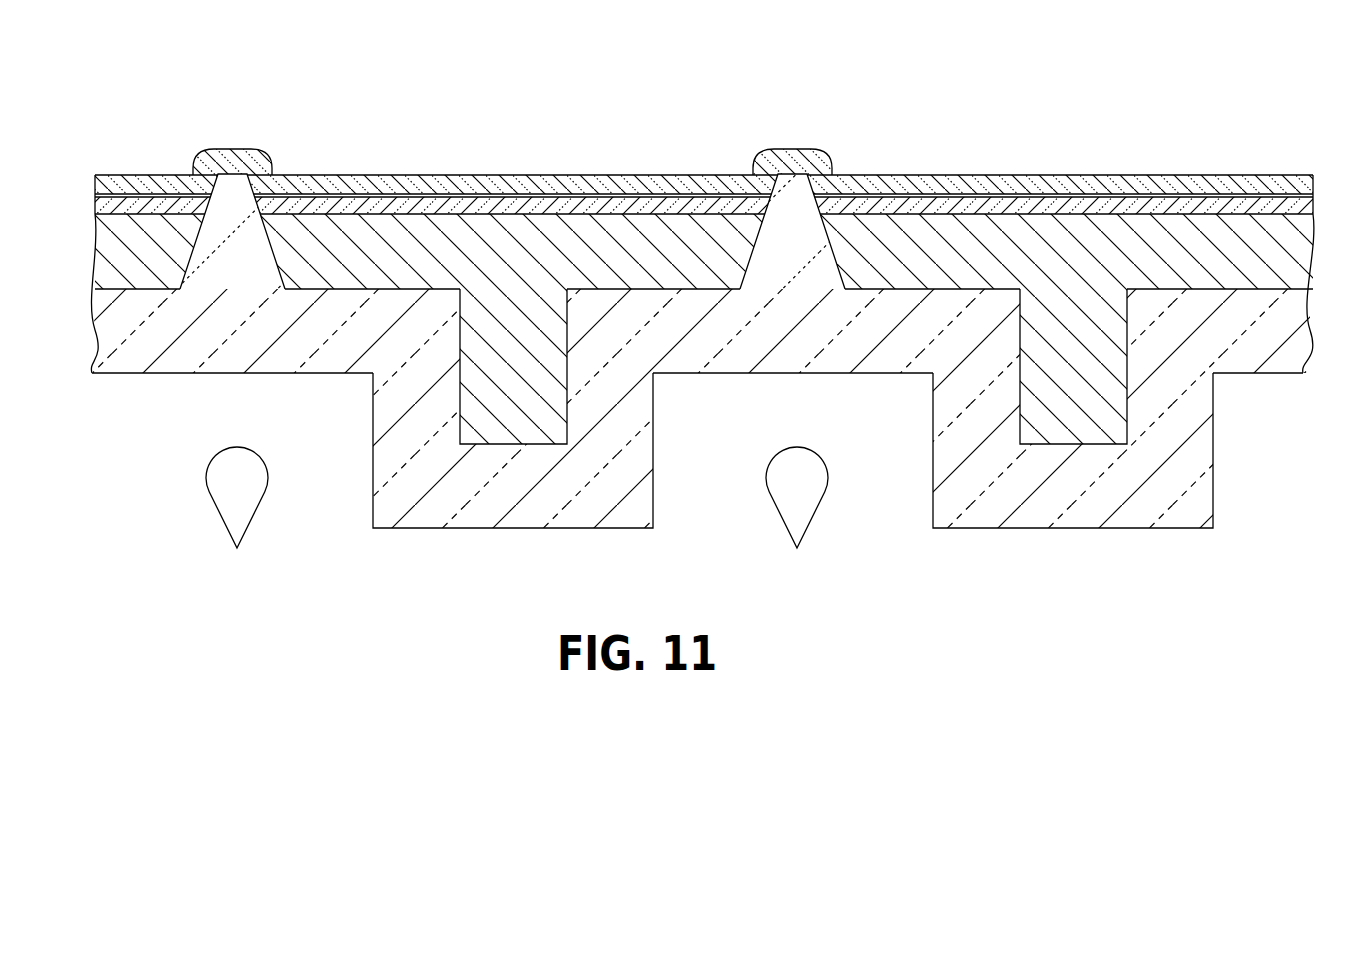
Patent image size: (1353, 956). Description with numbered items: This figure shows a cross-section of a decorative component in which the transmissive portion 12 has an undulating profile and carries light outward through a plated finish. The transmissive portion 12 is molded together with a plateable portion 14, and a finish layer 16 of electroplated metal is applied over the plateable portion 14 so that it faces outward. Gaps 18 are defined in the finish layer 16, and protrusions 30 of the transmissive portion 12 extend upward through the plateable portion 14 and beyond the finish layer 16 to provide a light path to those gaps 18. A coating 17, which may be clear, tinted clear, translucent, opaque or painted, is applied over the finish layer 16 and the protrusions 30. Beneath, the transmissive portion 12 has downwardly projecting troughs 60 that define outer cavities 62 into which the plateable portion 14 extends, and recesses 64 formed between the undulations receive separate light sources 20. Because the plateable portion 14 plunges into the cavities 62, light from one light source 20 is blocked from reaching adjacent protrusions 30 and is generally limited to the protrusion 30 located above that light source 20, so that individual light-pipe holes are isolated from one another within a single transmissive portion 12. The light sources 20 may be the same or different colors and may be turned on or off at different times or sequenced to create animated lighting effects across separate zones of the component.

The transmissive portion 12 is at (1252, 360).
The plateable portion 14 is at (590, 244).
The finish layer 16 is at (483, 200).
The coating 17 is at (1083, 175).
The gaps 18 is at (233, 200).
The light source 20 is at (243, 497).
The protrusions 30 is at (237, 203).
The troughs 60 is at (545, 497).
The outer cavities 62 is at (528, 381).
The recesses 64 is at (808, 423).